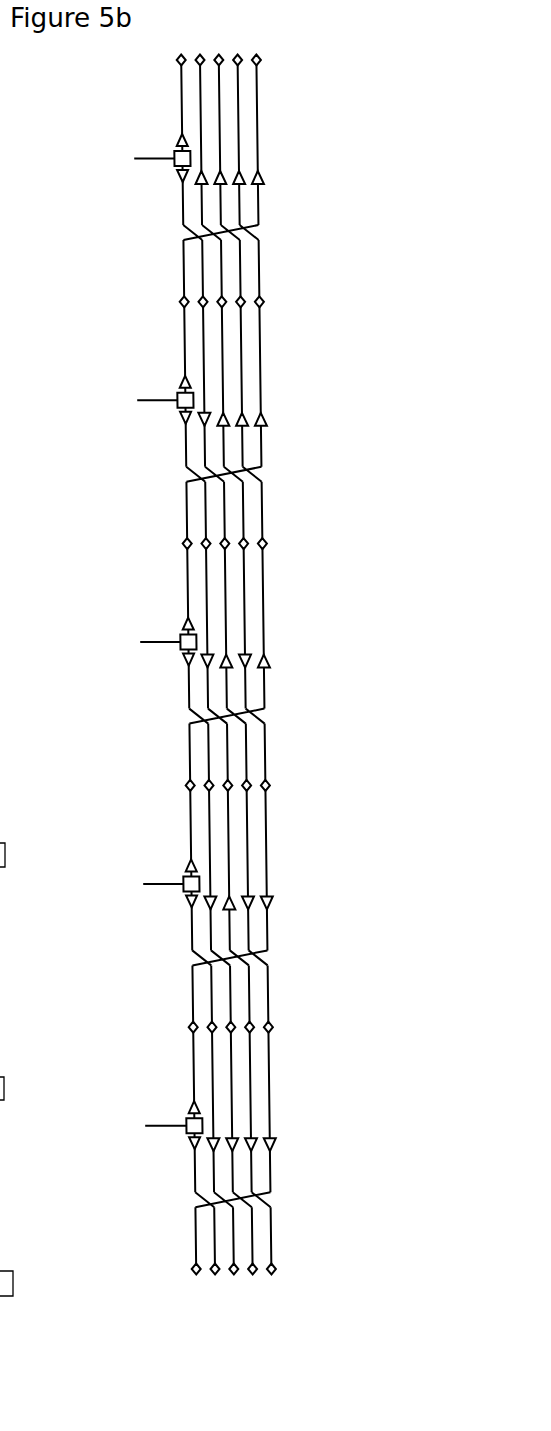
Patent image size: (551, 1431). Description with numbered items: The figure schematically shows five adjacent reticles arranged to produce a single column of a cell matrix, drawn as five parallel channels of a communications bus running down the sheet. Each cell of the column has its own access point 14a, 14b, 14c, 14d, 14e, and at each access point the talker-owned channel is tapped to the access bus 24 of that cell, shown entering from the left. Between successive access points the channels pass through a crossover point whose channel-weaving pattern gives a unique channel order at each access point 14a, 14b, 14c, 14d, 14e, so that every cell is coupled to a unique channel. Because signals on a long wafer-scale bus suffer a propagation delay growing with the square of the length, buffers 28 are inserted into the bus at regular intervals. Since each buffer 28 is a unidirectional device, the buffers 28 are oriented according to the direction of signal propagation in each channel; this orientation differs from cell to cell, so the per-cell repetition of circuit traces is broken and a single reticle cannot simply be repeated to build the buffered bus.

The access point 14a is at (174, 151).
The access point 14b is at (154, 384).
The access point 14c is at (157, 626).
The access point 14d is at (160, 867).
The access point 14e is at (163, 1109).
The access bus 24 is at (142, 159).
The buffer 28 is at (179, 138).